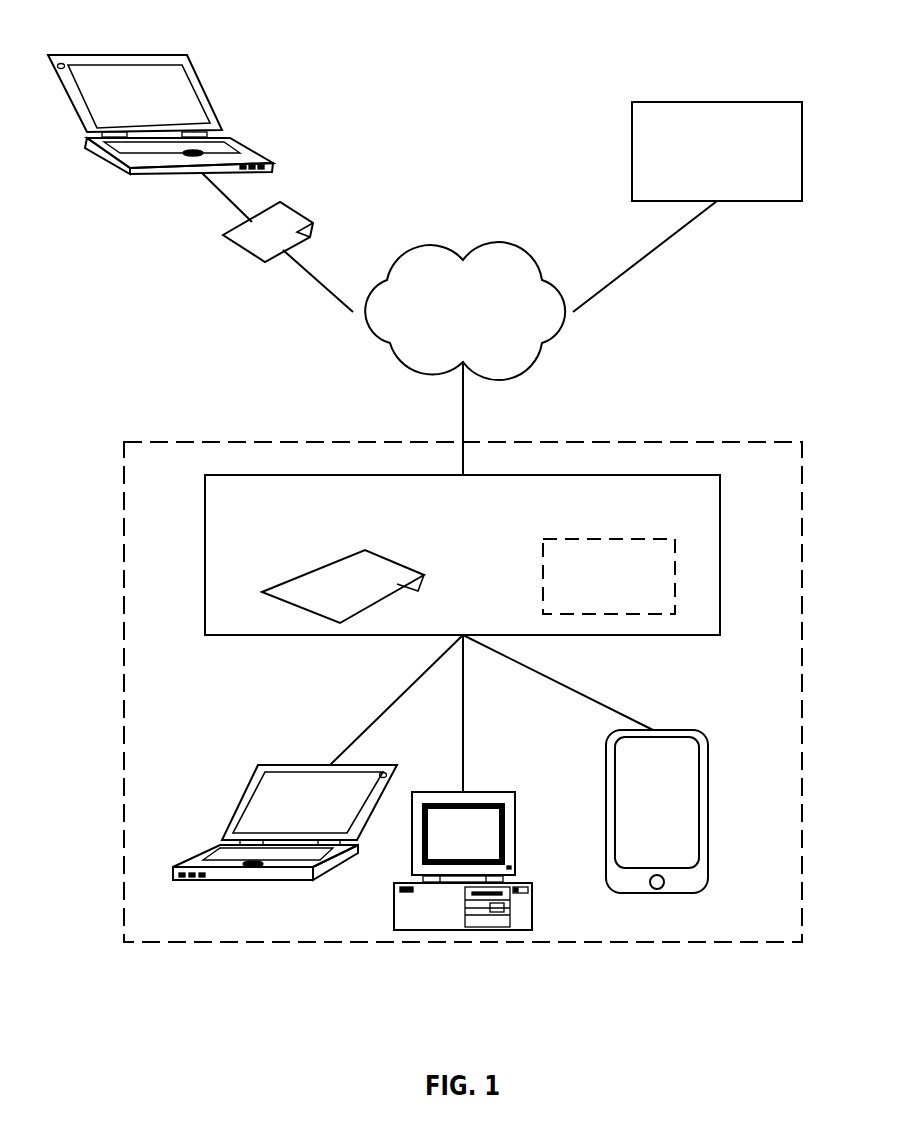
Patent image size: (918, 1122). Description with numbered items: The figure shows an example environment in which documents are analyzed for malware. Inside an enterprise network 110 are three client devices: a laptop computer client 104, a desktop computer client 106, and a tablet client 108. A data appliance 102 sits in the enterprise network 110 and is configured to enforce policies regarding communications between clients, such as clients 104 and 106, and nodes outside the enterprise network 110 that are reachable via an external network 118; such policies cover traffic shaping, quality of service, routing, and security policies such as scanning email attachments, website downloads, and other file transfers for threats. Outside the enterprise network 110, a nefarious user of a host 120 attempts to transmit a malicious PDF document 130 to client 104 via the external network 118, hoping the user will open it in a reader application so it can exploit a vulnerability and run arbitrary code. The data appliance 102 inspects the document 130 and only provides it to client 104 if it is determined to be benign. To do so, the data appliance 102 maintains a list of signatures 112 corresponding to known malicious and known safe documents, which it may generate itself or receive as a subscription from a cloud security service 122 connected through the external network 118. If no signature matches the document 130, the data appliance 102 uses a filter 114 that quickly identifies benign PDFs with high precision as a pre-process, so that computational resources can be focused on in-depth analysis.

The data appliance 102 is at (720, 553).
The client device 104 is at (378, 764).
The client device 106 is at (506, 792).
The client device 108 is at (708, 810).
The enterprise network 110 is at (593, 441).
The signatures 112 is at (421, 582).
The filter 114 is at (608, 539).
The external network 118 is at (543, 279).
The host 120 is at (118, 55).
The cloud security service 122 is at (720, 102).
The malicious PDF document 130 is at (293, 203).